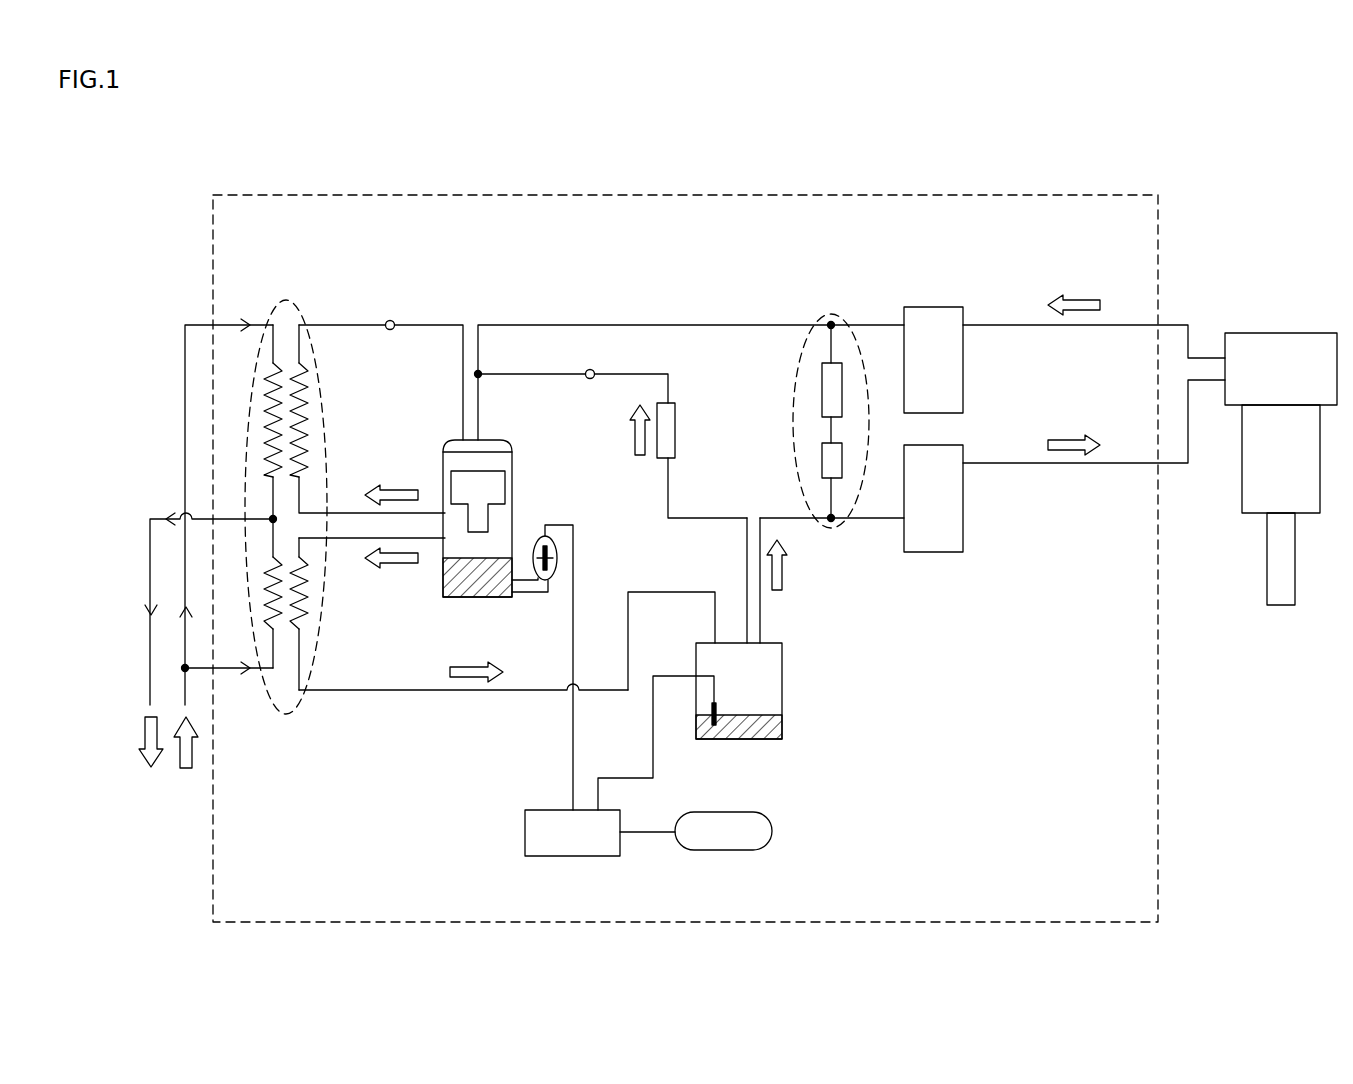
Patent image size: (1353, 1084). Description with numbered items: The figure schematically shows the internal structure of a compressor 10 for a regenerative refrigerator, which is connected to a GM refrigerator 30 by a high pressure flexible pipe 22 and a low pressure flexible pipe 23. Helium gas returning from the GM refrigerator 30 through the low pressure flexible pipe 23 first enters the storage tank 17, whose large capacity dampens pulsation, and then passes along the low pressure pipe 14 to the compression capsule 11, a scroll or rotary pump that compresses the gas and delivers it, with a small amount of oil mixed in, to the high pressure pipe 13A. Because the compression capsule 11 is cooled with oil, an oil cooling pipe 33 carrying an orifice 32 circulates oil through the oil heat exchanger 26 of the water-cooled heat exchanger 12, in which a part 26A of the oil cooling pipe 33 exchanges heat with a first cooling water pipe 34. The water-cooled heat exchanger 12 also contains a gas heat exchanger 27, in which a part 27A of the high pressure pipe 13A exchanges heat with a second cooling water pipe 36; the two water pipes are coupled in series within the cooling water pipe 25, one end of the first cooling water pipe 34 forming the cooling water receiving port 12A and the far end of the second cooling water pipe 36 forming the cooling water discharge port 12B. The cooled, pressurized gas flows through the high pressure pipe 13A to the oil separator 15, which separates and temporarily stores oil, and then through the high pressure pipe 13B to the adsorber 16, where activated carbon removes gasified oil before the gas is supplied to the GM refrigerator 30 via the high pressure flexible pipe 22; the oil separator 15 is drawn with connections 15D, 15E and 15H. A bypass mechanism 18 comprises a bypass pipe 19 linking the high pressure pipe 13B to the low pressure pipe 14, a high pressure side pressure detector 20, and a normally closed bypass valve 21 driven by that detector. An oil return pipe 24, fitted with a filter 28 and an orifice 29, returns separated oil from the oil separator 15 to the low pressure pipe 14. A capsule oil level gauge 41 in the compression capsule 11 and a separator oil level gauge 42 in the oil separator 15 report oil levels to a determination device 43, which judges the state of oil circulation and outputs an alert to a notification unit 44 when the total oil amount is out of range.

The compressor 10 is at (1140, 195).
The compression capsule 11 is at (436, 455).
The water-cooled heat exchanger 12 is at (328, 496).
The cooling water receiving port 12A is at (277, 318).
The cooling water discharge port 12B is at (278, 670).
The high pressure pipe 13A is at (425, 693).
The high pressure pipe 13B is at (876, 521).
The low pressure pipe 14 is at (718, 325).
The oil separator 15 is at (795, 680).
The drain pipe 15D is at (696, 592).
The inlet pipe 15E is at (761, 619).
The return pipe 15H is at (702, 518).
The adsorber 16 is at (978, 530).
The storage tank 17 is at (978, 372).
The bypass mechanism 18 is at (807, 378).
The bypass pipe 19 is at (831, 428).
The high pressure side pressure detector 20 is at (822, 462).
The bypass valve 21 is at (822, 390).
The high pressure flexible pipe 22 is at (1116, 463).
The low pressure flexible pipe 23 is at (1122, 325).
The oil return pipe 24 is at (625, 374).
The cooling water pipe 25 is at (186, 577).
The oil heat exchanger 26 is at (354, 441).
The part of the oil cooling pipe 26A is at (301, 382).
The gas heat exchanger 27 is at (354, 614).
The part of the high pressure pipe 27A is at (301, 588).
The filter 28 is at (678, 426).
The orifice 29 is at (590, 379).
The GM refrigerator 30 is at (1292, 328).
The orifice 32 is at (390, 320).
The oil cooling pipe 33 is at (437, 325).
The first cooling water pipe 34 is at (282, 370).
The second cooling water pipe 36 is at (282, 614).
The capsule oil level gauge 41 is at (533, 545).
The separator oil level gauge 42 is at (718, 713).
The determination device 43 is at (545, 808).
The notification unit 44 is at (774, 826).